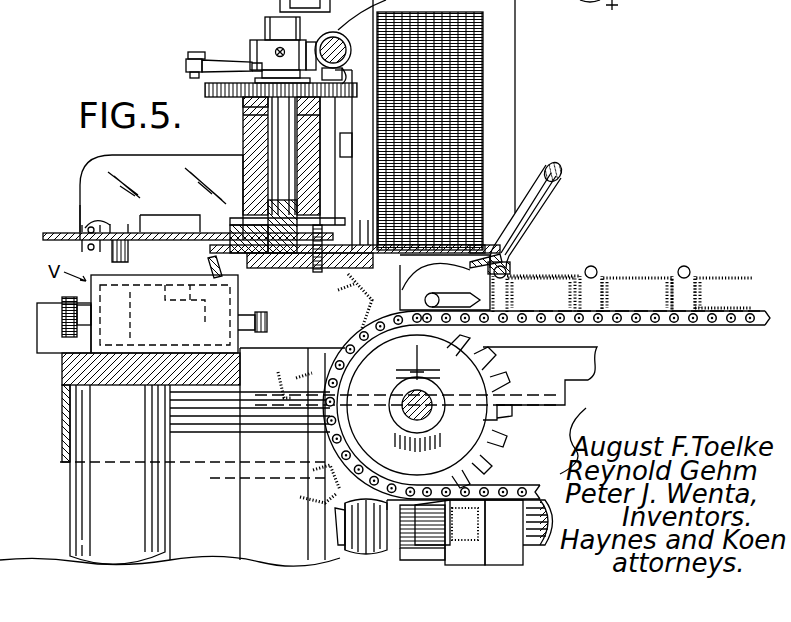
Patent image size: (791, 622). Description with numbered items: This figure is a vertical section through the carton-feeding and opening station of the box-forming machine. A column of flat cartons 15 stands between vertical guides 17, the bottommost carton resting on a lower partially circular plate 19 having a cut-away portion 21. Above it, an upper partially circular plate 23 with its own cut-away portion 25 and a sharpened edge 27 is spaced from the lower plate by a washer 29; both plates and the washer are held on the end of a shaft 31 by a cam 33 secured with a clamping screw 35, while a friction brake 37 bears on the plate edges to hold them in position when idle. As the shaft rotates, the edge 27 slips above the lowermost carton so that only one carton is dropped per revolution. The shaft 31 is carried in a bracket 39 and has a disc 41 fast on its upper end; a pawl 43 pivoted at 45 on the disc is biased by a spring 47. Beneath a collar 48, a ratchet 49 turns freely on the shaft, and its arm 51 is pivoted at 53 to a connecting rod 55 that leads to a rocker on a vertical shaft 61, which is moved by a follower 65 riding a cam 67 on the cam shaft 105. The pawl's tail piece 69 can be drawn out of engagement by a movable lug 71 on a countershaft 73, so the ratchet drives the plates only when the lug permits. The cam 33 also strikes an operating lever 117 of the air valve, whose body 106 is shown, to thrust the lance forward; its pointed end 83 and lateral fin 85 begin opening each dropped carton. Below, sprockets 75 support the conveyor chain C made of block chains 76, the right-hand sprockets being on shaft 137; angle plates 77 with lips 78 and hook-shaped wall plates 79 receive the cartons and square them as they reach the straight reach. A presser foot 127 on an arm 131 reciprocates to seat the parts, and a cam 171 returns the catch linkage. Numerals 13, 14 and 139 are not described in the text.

The base frame 13 is at (70, 376).
The column 14 is at (80, 518).
The carton 15 is at (414, 52).
The vertical guides 17 is at (505, 64).
The lower partially circular plate 19 is at (528, 262).
The cut-away portion 21 is at (212, 249).
The upper partially circular plate 23 is at (55, 234).
The cut-away portion 25 is at (378, 244).
The edge 27 is at (385, 240).
The washer 29 is at (240, 222).
The shaft 31 is at (276, 174).
The cam 33 is at (290, 266).
The clamping screw 35 is at (318, 268).
The friction brake 37 is at (88, 212).
The bracket 39 is at (150, 164).
The disc 41 is at (206, 92).
The pawl 43 is at (295, 92).
The pivot 45 is at (316, 58).
The spring 47 is at (246, 86).
The collar 48 is at (260, 44).
The ratchet 49 is at (258, 72).
The arm 51 is at (211, 64).
The pivot 53 is at (190, 57).
The connecting rod 55 is at (186, 62).
The vertical shaft 61 is at (360, 562).
The follower 65 is at (468, 525).
The cam 67 is at (434, 560).
The tail piece 69 is at (350, 72).
The movable lug 71 is at (352, 62).
The countershaft 73 is at (335, 32).
The sprockets 75 is at (485, 418).
The block chains 76 is at (684, 330).
The angle plates 77 is at (335, 400).
The lip 78 is at (730, 270).
The hook-shaped wall plates 79 is at (356, 298).
The pointed end 83 is at (445, 282).
The lateral fin 85 is at (481, 270).
The cam shaft 105 is at (534, 545).
The body 106 is at (135, 373).
The operating lever 117 is at (207, 264).
The presser foot 127 is at (532, 238).
The arm 131 is at (277, 6).
The shaft 137 is at (622, 16).
The guide bar 139 is at (588, 13).
The cam 171 is at (488, 545).
The conveyor chain C is at (698, 270).